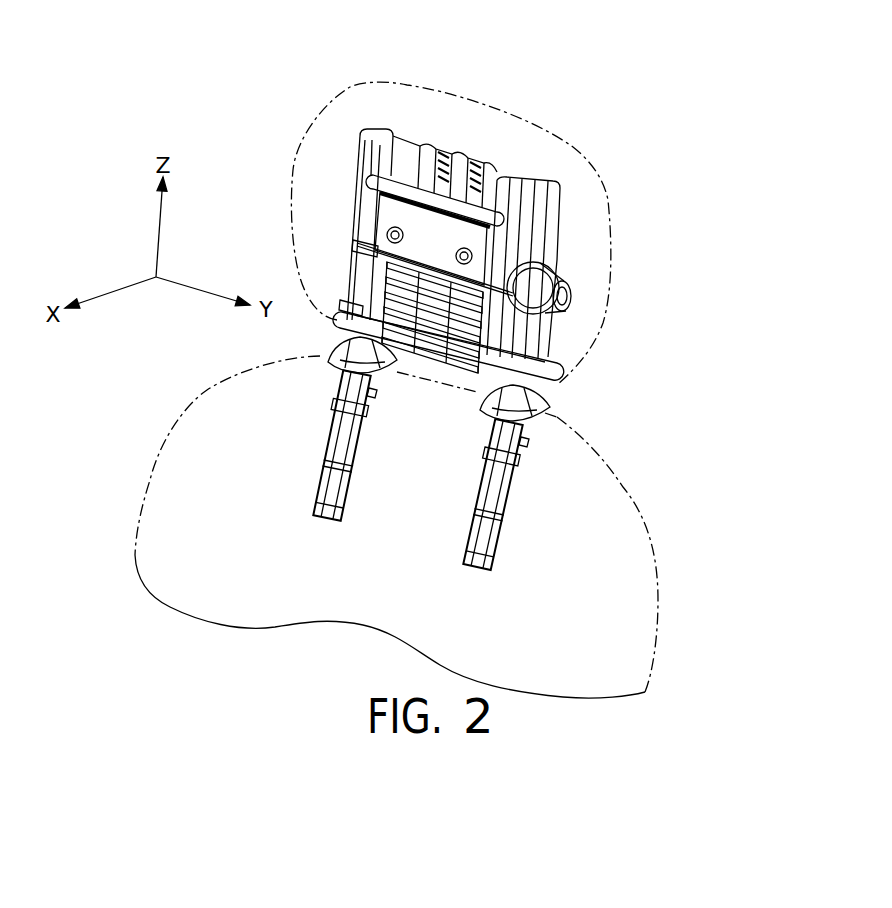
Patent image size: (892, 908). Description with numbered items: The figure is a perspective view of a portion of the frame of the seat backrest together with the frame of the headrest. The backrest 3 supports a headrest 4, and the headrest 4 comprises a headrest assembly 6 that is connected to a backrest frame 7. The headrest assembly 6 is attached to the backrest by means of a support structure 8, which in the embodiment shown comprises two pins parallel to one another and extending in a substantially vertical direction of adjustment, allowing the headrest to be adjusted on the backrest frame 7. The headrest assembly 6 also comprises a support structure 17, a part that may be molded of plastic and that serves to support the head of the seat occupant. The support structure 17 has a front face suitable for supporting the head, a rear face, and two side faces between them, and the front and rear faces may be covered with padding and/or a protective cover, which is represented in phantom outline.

The backrest 3 is at (640, 595).
The headrest 4 is at (603, 203).
The headrest assembly 6 is at (635, 247).
The backrest frame 7 is at (598, 487).
The support structure 8 is at (567, 395).
The support structure 17 is at (412, 120).